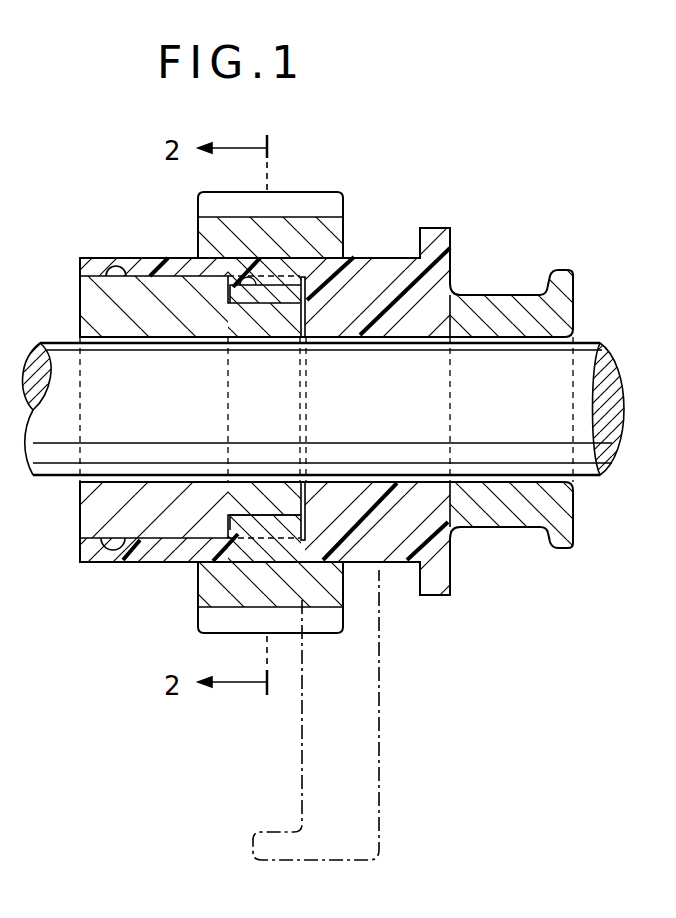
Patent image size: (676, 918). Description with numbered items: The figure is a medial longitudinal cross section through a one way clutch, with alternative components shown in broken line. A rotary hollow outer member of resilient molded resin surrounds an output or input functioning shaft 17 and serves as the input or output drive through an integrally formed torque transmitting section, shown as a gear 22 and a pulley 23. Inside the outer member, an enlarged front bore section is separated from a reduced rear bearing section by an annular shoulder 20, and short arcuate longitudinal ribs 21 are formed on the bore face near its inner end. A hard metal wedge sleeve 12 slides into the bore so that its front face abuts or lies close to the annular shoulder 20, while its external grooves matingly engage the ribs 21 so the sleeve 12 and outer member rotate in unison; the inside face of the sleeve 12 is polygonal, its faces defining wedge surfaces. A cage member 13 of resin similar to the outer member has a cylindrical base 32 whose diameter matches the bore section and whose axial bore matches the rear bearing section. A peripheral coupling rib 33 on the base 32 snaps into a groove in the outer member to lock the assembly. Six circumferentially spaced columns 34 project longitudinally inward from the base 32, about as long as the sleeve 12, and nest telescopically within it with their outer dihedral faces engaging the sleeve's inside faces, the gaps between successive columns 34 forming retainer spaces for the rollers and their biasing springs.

The wedge sleeve 12 is at (258, 517).
The cage member 13 is at (104, 311).
The shaft 17 is at (585, 353).
The annular shoulder 20 is at (302, 312).
The longitudinal ribs 21 is at (244, 290).
The gear 22 is at (207, 242).
The pulley 23 is at (490, 298).
The cylindrical base 32 is at (97, 505).
The peripheral coupling rib 33 is at (127, 262).
The columns 34 is at (282, 500).